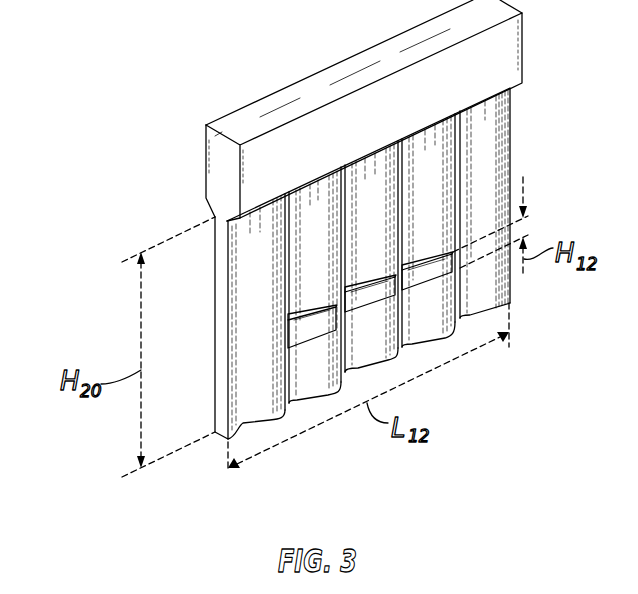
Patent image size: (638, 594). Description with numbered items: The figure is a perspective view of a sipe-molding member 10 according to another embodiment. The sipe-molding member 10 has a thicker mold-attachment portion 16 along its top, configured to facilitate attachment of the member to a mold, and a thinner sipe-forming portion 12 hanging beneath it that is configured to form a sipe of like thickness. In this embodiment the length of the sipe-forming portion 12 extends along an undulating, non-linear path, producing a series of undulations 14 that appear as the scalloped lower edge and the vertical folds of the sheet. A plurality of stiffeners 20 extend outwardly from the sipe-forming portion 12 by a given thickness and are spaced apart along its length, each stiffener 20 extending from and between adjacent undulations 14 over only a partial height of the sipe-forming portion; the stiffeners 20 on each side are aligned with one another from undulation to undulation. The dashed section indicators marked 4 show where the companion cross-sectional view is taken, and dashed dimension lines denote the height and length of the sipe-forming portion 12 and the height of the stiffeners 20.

The sipe-molding member 10 is at (348, 239).
The mold-attachment portion 16 is at (510, 52).
The sipe-forming portion 12 is at (394, 283).
The stiffeners 20 is at (344, 296).
The undulations 14 is at (322, 398).
The section line 4- 4 is at (224, 299).